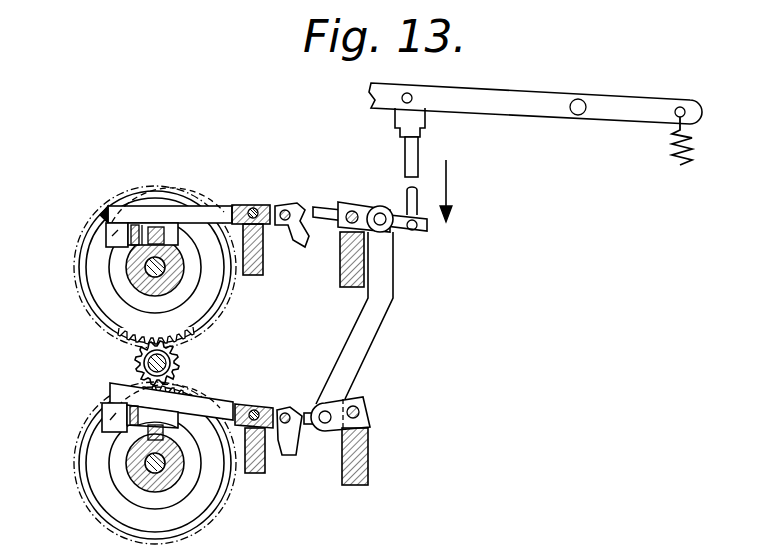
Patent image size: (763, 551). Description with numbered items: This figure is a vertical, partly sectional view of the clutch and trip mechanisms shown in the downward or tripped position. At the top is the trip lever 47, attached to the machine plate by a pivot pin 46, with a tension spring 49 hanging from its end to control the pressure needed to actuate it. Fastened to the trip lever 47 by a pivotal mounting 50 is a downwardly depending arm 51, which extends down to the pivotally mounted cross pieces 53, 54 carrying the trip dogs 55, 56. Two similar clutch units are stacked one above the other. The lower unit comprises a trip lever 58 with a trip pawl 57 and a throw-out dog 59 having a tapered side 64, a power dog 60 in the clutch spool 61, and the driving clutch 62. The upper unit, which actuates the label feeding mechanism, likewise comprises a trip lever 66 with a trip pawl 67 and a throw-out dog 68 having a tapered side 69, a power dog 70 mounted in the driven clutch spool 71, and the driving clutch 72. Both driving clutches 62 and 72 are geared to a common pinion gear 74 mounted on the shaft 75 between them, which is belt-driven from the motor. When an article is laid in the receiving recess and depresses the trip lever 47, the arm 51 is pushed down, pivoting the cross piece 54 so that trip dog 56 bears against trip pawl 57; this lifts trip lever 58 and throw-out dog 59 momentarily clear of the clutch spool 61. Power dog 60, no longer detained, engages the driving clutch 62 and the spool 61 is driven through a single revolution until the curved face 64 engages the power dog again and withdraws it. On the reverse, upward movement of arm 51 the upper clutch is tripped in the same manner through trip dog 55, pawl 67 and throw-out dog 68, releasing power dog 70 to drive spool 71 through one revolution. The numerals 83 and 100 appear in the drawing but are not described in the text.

The pivot pin 46 is at (584, 104).
The trip lever 47 is at (500, 103).
The tension spring 49 is at (690, 157).
The pivotal mounting 50 is at (412, 97).
The arm 51 is at (413, 171).
The cross piece 53 is at (372, 203).
The cross piece 54 is at (363, 398).
The trip dog 55 is at (315, 207).
The trip dog 56 is at (308, 414).
The trip pawl 57 is at (300, 430).
The trip lever 58 is at (223, 402).
The throw-out dog 59 is at (118, 410).
The power dog 60 is at (148, 438).
The clutch spool 61 is at (137, 493).
The driving clutch 62 is at (77, 478).
The tapered side 64 is at (127, 430).
The trip lever 66 is at (222, 204).
The trip pawl 67 is at (302, 202).
The throw-out dog 68 is at (117, 235).
The tapered side 69 is at (125, 248).
The power dog 70 is at (133, 253).
The driven clutch spool 71 is at (140, 288).
The driving clutch 72 is at (104, 217).
The pinion gear 74 is at (177, 372).
The shaft 75 is at (133, 362).
The shaft 83 is at (150, 468).
The shaft 100 is at (152, 266).